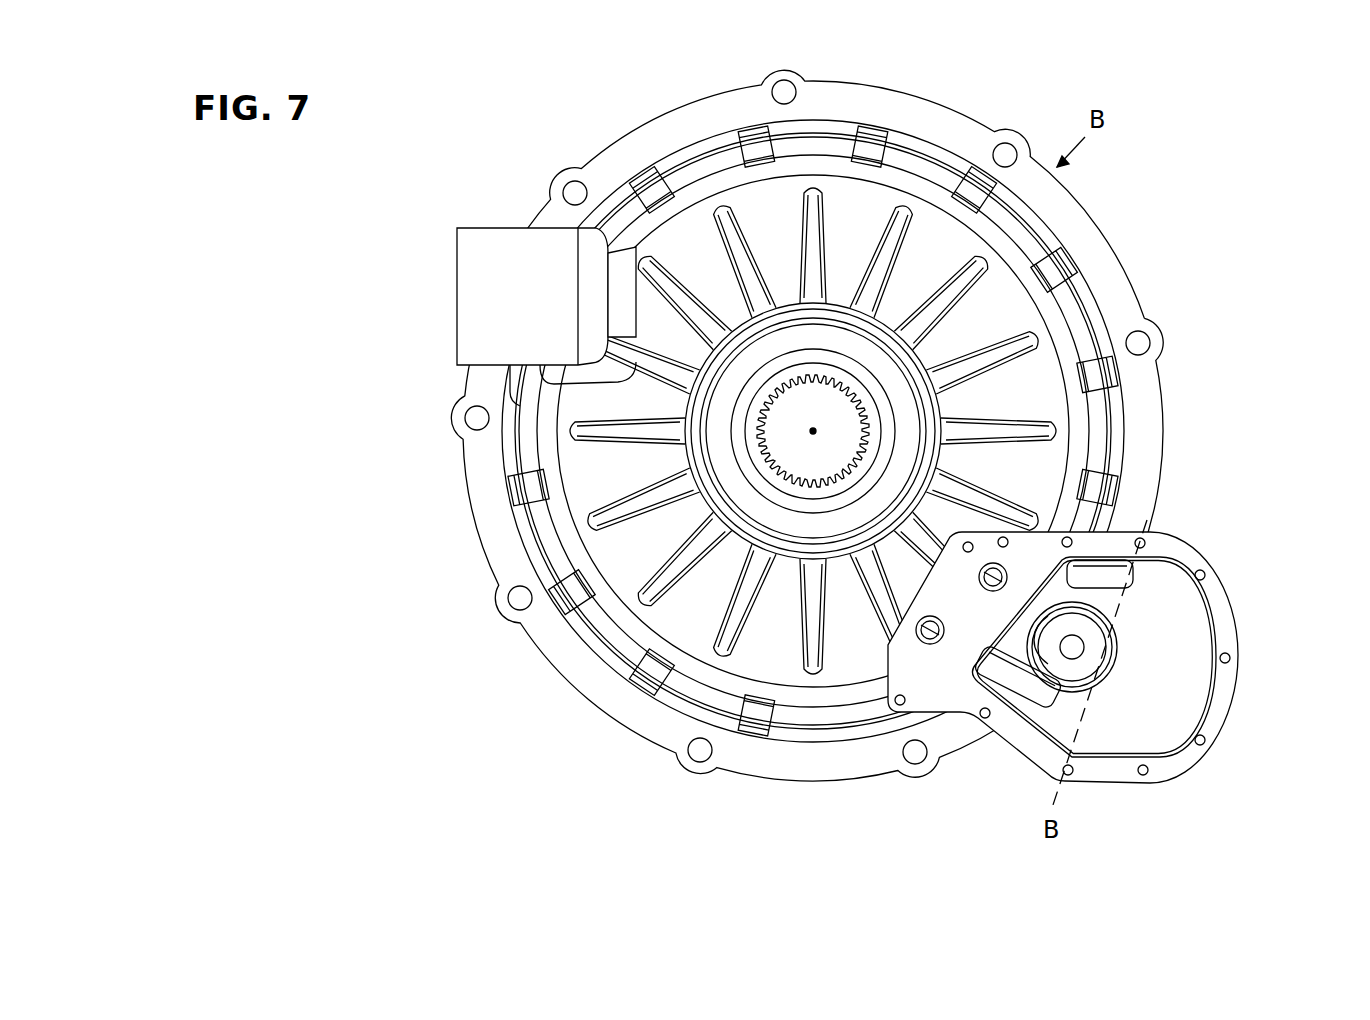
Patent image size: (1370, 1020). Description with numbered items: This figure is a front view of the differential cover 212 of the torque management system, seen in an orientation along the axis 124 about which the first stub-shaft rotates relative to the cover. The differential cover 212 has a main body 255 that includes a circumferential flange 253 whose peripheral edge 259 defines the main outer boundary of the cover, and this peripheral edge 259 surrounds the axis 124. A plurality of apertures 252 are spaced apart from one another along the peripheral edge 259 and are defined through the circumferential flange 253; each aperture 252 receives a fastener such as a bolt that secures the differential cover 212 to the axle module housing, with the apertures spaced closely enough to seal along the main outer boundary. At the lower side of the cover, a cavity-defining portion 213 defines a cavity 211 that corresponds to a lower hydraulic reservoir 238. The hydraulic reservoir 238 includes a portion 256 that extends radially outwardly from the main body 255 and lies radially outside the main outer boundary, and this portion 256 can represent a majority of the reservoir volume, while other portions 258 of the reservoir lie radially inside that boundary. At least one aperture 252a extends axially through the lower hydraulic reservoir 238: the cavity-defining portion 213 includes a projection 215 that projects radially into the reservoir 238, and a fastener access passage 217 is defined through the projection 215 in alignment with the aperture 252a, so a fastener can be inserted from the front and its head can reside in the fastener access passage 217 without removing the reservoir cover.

The axis 124 is at (813, 431).
The cavity 211 is at (1177, 642).
The differential cover 212 is at (1105, 222).
The cavity-defining portion 213 is at (1170, 577).
The projection 215 is at (1118, 632).
The fastener access passage 217 is at (1050, 647).
The lower hydraulic reservoir 238 is at (1205, 597).
The apertures 252 is at (790, 82).
The aperture 252a is at (1072, 659).
The circumferential flange 253 is at (1168, 378).
The main body 255 is at (1068, 323).
The portion 256 is at (1177, 683).
The portions 258 is at (1092, 580).
The peripheral edge 259 is at (1165, 428).